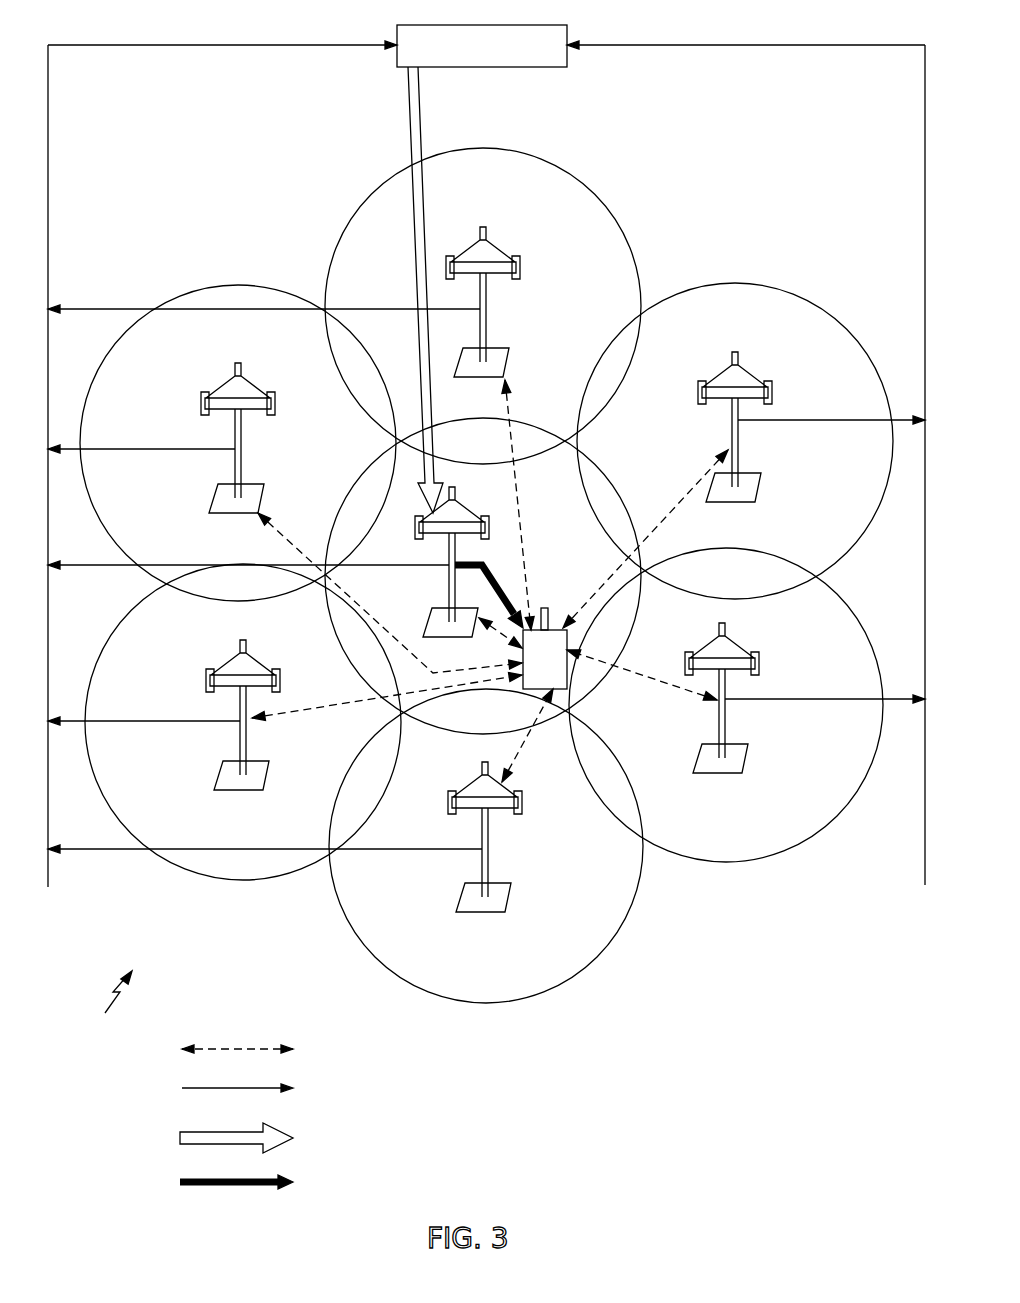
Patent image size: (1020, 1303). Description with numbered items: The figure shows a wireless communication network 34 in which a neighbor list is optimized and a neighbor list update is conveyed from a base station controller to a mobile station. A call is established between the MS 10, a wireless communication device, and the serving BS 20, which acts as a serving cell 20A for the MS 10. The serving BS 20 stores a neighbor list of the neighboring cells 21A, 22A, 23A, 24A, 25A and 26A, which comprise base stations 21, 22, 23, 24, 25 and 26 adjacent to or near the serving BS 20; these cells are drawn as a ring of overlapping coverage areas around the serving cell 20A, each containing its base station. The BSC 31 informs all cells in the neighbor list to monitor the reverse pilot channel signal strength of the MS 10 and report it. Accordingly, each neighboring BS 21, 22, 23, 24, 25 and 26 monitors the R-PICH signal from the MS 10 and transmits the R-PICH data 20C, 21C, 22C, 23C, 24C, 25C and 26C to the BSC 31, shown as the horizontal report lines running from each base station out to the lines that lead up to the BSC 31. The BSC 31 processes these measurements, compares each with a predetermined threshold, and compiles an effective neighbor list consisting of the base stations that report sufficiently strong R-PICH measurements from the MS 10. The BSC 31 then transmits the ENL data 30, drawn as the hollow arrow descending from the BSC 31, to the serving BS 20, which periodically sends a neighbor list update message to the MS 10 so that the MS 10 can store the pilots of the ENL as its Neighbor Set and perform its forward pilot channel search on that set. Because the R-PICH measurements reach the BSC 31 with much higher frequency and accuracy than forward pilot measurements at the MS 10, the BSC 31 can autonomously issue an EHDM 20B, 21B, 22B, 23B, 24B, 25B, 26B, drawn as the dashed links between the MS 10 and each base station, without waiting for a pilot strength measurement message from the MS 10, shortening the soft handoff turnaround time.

The mobile station 10 is at (548, 608).
The serving base station 20 is at (440, 607).
The neighboring base station 21 is at (232, 483).
The neighboring base station 22 is at (498, 347).
The neighboring base station 23 is at (750, 472).
The neighboring base station 24 is at (738, 744).
The neighboring base station 25 is at (500, 885).
The neighboring base station 26 is at (234, 762).
The serving cell 20A is at (618, 487).
The neighboring cell 21A is at (250, 285).
The neighboring cell 22A is at (596, 196).
The neighboring cell 23A is at (745, 283).
The neighboring cell 24A is at (713, 864).
The neighboring cell 25A is at (370, 950).
The neighboring cell 26A is at (250, 881).
The extended handoff direction message 20B is at (500, 634).
The extended handoff direction message 21B is at (298, 548).
The extended handoff direction message 22B is at (508, 408).
The extended handoff direction message 23B is at (683, 500).
The extended handoff direction message 24B is at (683, 689).
The extended handoff direction message 25B is at (523, 750).
The extended handoff direction message 26B is at (290, 714).
The R-PICH data 20C is at (125, 566).
The R-PICH data 21C is at (97, 449).
The R-PICH data 22C is at (76, 309).
The R-PICH data 23C is at (816, 420).
The R-PICH data 24C is at (806, 699).
The R-PICH data 25C is at (125, 850).
The R-PICH data 26C is at (110, 721).
The effective neighbor list data 30 is at (422, 118).
The base station controller 31 is at (498, 24).
The wireless communication network 34 is at (497, 1082).